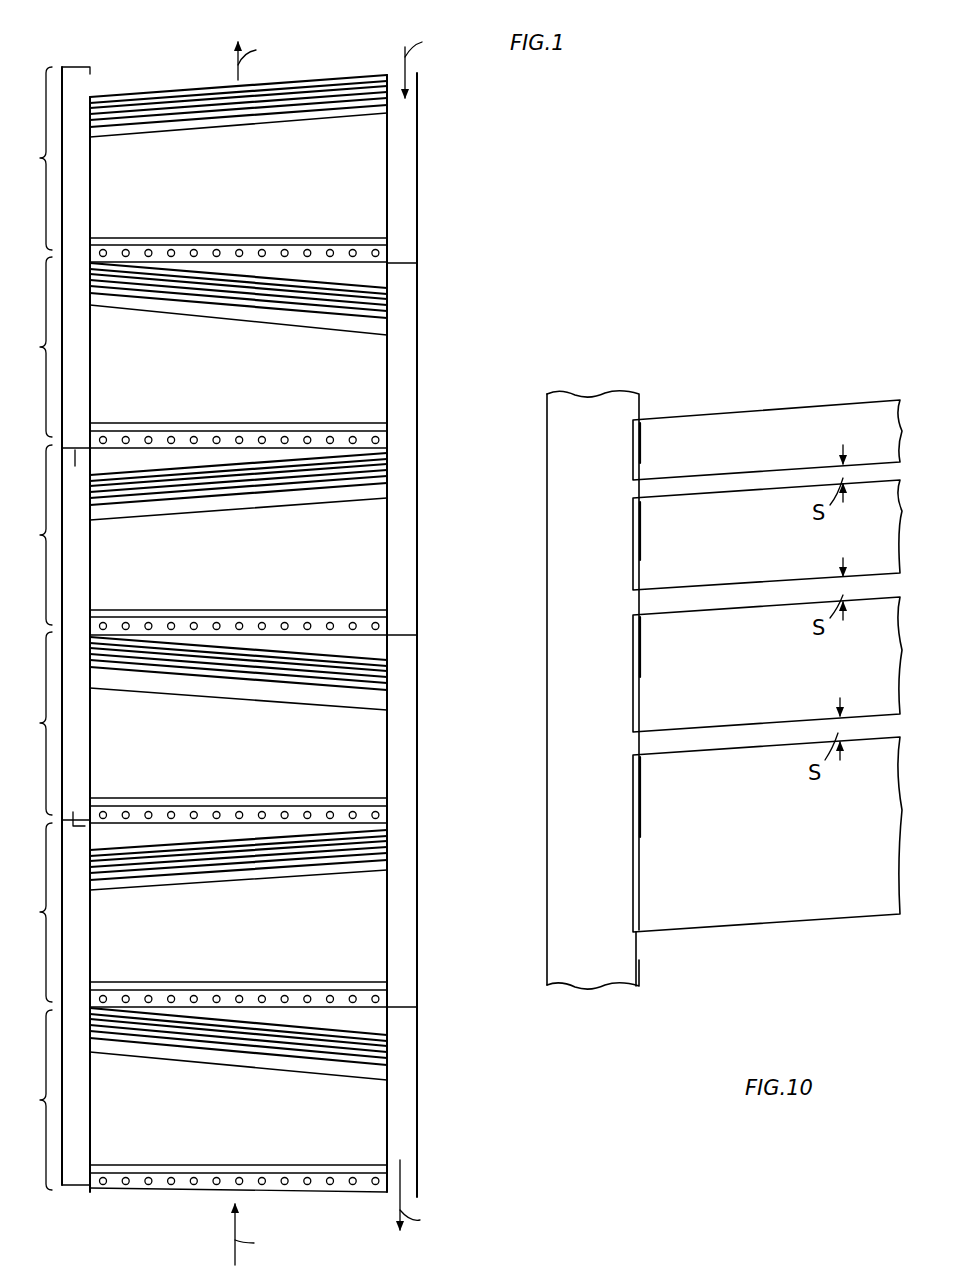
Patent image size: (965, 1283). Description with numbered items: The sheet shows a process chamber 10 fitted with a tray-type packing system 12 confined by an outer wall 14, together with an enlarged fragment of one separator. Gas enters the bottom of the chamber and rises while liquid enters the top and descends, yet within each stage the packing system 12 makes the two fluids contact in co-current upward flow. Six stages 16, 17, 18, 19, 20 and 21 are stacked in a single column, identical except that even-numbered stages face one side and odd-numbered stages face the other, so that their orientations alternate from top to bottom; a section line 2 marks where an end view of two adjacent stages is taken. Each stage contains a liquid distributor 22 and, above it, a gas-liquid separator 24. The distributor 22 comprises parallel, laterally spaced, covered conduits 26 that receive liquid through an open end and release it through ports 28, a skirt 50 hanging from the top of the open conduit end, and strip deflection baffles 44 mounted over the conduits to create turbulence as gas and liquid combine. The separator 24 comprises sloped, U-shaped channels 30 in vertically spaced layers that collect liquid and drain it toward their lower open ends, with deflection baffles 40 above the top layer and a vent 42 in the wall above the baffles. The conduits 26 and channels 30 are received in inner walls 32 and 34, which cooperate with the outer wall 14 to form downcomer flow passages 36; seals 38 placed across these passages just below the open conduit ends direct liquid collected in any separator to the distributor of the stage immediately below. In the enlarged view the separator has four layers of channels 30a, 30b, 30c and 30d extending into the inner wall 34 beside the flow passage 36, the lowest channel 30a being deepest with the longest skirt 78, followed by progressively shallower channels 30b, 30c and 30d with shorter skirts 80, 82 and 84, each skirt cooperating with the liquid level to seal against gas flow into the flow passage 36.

In FIG. 1, the process chamber 10 is at (430, 347).
In FIG. 1, the tray-type packing system 12 is at (172, 70).
In FIG. 1, the outer wall 14 is at (417, 935).
In FIG. 10, the outer wall 14 is at (549, 890).
In FIG. 1, the highest packing stage 16 is at (34, 158).
In FIG. 1, the packing stage 17 is at (34, 347).
In FIG. 1, the packing stage 18 is at (34, 535).
In FIG. 1, the packing stage 19 is at (34, 723).
In FIG. 1, the packing stage 20 is at (32, 912).
In FIG. 1, the lowest packing stage 21 is at (32, 1100).
In FIG. 1, the liquid distributor 22 is at (324, 421).
In FIG. 1, the gas-liquid separator 24 is at (290, 325).
In FIG. 10, the gas-liquid separator 24 is at (767, 650).
In FIG. 1, the conduit 26 is at (390, 258).
In FIG. 1, the port 28 is at (360, 245).
In FIG. 1, the channel 30 is at (310, 872).
In FIG. 1, the inner wall 32 is at (388, 893).
In FIG. 1, the inner wall 34 is at (92, 565).
In FIG. 10, the inner wall 34 is at (636, 962).
In FIG. 1, the flow passage 36 is at (403, 143).
In FIG. 10, the flow passage 36 is at (596, 400).
In FIG. 1, the seal 38 is at (72, 440).
In FIG. 1, the deflection baffle 40 is at (325, 78).
In FIG. 1, the vent 42 is at (92, 67).
In FIG. 1, the deflection baffle 44 is at (318, 610).
In FIG. 1, the skirt 50 is at (88, 1185).
In FIG. 1, the section line 2 is at (75, 638).
In FIG. 10, the lowest channel 30a is at (767, 856).
In FIG. 10, the channel 30b is at (767, 664).
In FIG. 10, the channel 30c is at (767, 535).
In FIG. 10, the highest channel 30d is at (767, 420).
In FIG. 10, the skirt 78 is at (641, 808).
In FIG. 10, the skirt 80 is at (641, 658).
In FIG. 10, the skirt 82 is at (641, 540).
In FIG. 10, the skirt 84 is at (641, 443).